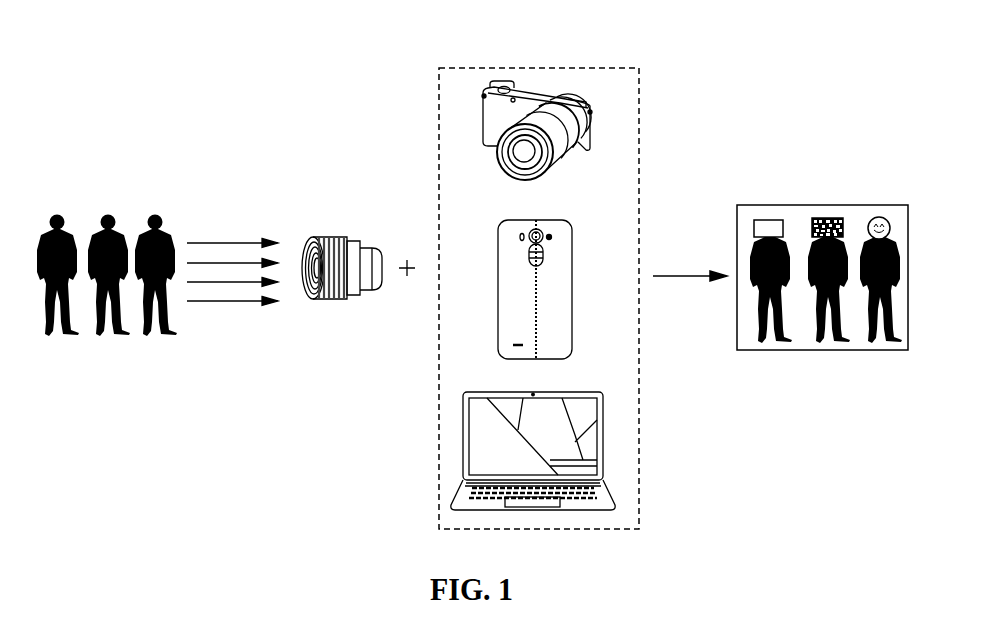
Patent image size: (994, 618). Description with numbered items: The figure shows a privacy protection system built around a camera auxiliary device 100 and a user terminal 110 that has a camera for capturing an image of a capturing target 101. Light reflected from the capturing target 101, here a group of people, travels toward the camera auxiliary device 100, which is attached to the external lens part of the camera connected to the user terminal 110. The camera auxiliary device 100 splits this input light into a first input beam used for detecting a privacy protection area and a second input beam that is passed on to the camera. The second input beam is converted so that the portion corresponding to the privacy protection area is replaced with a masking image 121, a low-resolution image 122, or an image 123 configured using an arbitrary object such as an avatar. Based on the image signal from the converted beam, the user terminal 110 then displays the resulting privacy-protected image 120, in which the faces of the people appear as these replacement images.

The capturing target 101 is at (106, 203).
The camera auxiliary device 100 is at (325, 236).
The user terminal 110 is at (537, 67).
The privacy-protected image 120 is at (822, 286).
The masking image 121 is at (766, 220).
The low-resolution image 122 is at (825, 218).
The image configured using an arbitrary object 123 is at (878, 217).